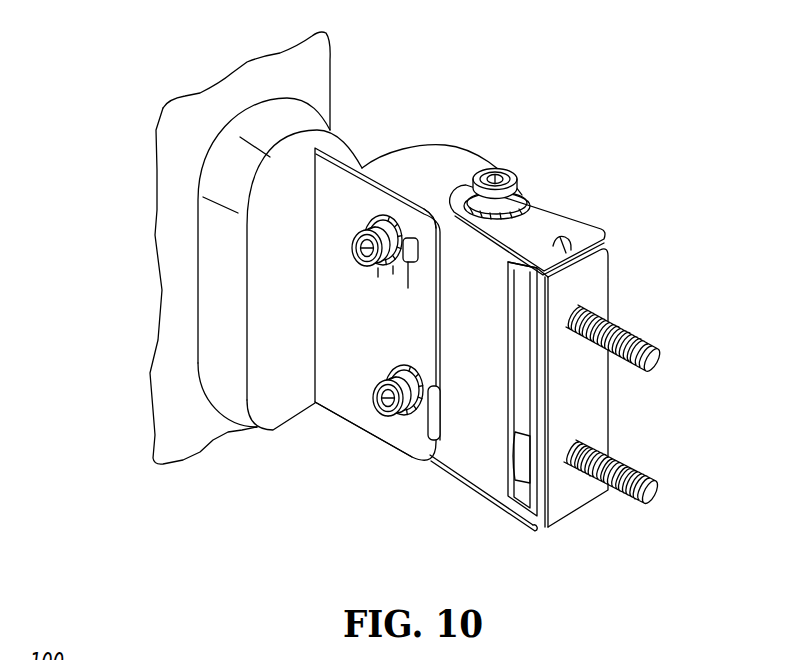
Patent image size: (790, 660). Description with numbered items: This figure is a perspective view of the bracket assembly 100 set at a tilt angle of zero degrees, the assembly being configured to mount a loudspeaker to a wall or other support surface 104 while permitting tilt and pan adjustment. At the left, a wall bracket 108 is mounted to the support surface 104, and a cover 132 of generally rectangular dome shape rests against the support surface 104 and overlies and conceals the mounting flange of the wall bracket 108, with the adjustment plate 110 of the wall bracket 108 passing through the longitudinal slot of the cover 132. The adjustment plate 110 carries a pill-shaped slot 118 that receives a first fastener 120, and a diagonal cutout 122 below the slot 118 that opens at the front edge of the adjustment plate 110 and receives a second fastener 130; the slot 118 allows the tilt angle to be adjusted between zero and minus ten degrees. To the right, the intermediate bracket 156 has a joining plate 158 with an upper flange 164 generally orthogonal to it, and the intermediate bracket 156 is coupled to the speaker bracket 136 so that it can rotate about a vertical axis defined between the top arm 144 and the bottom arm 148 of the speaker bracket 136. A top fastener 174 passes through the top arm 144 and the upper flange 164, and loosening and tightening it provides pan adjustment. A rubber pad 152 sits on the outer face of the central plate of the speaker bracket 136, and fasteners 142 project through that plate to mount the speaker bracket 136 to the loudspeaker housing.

The bracket assembly 100 is at (152, 57).
The support surface 104 is at (172, 236).
The wall bracket 108 is at (379, 437).
The adjustment plate 110 is at (342, 165).
The slot 118 is at (410, 223).
The first fastener 120 is at (357, 235).
The cutout 122 is at (432, 376).
The second fastener 130 is at (378, 412).
The cover 132 is at (208, 357).
The speaker bracket 136 is at (571, 213).
The fastener 142 is at (628, 324).
The top arm 144 is at (538, 192).
The bottom arm 148 is at (500, 517).
The pad 152 is at (582, 394).
The intermediate bracket 156 is at (400, 165).
The joining plate 158 is at (472, 437).
The upper flange 164 is at (478, 166).
The top fastener 174 is at (508, 180).